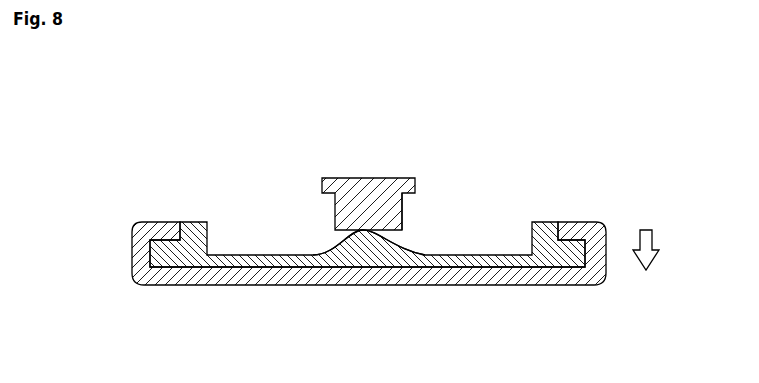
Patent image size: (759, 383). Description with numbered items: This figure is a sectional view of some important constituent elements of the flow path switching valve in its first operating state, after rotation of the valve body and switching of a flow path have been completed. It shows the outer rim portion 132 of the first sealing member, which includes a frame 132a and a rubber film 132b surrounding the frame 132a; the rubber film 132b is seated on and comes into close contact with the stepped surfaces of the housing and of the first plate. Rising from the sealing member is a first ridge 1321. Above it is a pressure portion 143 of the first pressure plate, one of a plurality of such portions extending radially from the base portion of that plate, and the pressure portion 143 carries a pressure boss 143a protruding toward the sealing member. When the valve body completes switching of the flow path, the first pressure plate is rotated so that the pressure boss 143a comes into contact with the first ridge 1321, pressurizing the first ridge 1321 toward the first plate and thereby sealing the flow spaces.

The outer rim portion 132 is at (380, 232).
The frame 132a is at (192, 222).
The rubber film 132b is at (144, 268).
The first ridge 1321 is at (344, 241).
The pressure portion 143 is at (367, 178).
The pressure boss 143a is at (402, 203).